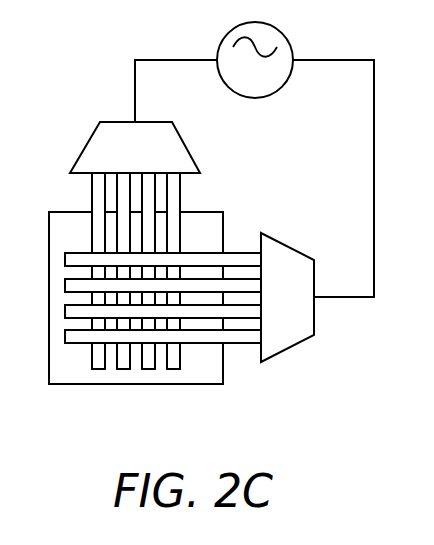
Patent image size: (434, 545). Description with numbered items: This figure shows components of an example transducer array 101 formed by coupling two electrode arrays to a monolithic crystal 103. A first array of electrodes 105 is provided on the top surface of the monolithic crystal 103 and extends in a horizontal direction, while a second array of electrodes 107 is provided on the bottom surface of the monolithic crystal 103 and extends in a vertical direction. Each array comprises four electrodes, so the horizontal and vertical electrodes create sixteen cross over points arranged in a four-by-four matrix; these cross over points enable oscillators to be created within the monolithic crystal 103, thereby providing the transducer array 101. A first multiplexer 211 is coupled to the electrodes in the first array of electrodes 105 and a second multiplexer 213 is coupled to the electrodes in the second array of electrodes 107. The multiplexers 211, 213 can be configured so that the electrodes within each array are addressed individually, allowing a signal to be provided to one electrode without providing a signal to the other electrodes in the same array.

The transducer array 101 is at (63, 373).
The monolithic crystal 103 is at (197, 384).
The first array of electrodes 105 is at (243, 253).
The second array of electrodes 107 is at (92, 190).
The first multiplexer 211 is at (288, 352).
The second multiplexer 213 is at (182, 133).